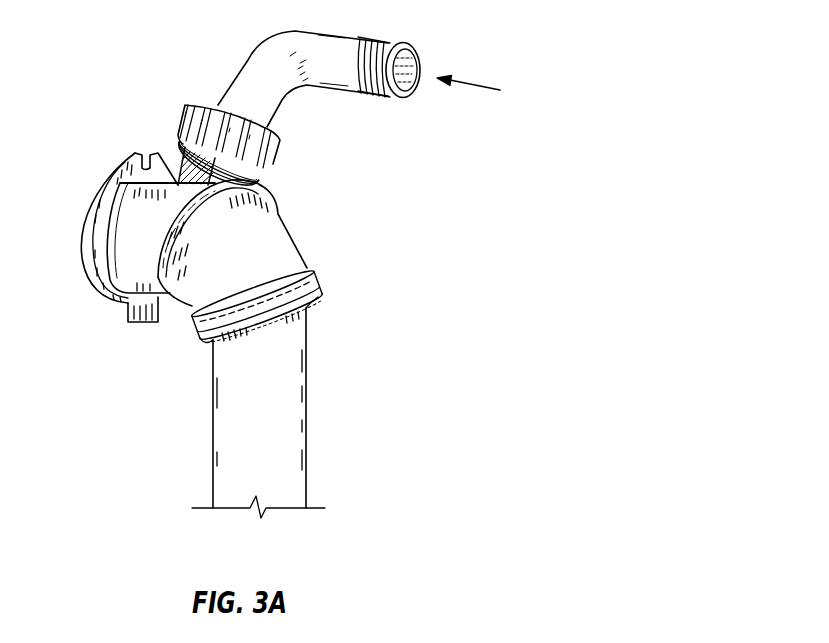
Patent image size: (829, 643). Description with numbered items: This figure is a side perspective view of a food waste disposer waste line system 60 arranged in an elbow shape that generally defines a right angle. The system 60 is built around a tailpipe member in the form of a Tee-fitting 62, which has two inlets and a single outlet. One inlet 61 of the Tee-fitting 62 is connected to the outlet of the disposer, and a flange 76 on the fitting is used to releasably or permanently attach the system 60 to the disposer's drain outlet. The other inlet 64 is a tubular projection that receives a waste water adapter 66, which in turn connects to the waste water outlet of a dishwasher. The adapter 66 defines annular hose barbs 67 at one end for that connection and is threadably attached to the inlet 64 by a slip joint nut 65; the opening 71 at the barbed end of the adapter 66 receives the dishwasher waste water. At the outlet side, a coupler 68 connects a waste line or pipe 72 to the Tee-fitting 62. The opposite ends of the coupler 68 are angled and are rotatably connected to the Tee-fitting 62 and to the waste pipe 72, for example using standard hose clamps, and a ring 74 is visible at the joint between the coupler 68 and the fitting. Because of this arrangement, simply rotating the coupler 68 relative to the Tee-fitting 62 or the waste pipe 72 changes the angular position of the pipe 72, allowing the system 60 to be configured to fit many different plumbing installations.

The waste line system 60 is at (108, 56).
The inlet 61 is at (80, 220).
The Tee-fitting 62 is at (127, 265).
The inlet 64 is at (185, 163).
The slip joint nut 65 is at (273, 143).
The waste water adapter 66 is at (298, 32).
The annular hose barbs 67 is at (390, 40).
The coupler 68 is at (280, 248).
The outlet opening 71 is at (407, 62).
The waste pipe 72 is at (298, 393).
The coupling ring 74 is at (182, 219).
The flange 76 is at (147, 327).